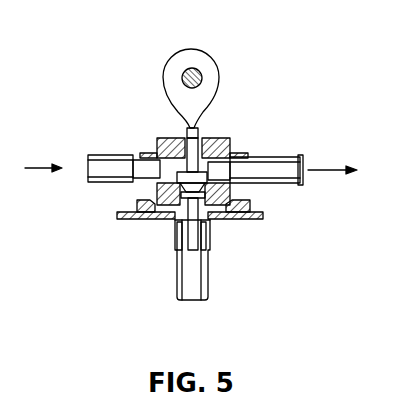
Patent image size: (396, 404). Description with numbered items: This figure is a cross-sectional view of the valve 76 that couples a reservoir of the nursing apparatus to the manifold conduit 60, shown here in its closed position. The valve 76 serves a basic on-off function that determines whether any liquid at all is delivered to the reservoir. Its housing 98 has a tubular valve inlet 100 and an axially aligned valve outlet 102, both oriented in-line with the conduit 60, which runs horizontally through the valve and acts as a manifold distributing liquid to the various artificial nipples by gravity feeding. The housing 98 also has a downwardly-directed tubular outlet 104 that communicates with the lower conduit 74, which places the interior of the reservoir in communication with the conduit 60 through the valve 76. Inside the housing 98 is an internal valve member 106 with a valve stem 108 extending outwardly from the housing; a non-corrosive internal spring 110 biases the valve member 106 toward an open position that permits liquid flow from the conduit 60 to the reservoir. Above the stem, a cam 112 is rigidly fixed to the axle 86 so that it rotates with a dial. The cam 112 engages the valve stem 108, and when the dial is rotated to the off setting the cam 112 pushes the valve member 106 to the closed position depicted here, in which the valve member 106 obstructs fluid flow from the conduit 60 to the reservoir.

The conduit 60 is at (118, 153).
The conduit 74 is at (207, 283).
The valve 76 is at (153, 58).
The axle 86 is at (202, 78).
The housing 98 is at (180, 132).
The tubular valve inlet 100 is at (142, 183).
The valve outlet 102 is at (252, 187).
The downwardly-directed tubular outlet 104 is at (182, 235).
The internal valve member 106 is at (232, 150).
The valve stem 108 is at (200, 129).
The internal spring 110 is at (208, 222).
The cam 112 is at (209, 52).